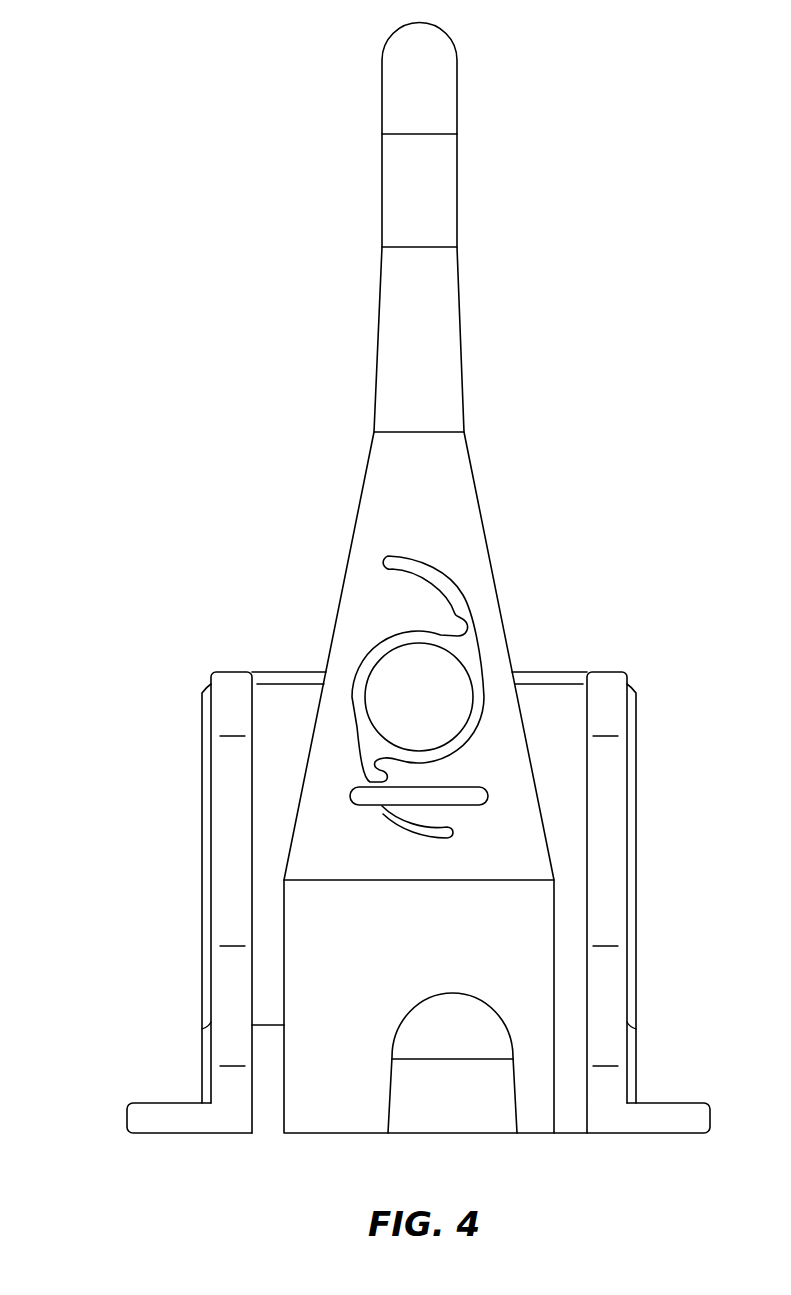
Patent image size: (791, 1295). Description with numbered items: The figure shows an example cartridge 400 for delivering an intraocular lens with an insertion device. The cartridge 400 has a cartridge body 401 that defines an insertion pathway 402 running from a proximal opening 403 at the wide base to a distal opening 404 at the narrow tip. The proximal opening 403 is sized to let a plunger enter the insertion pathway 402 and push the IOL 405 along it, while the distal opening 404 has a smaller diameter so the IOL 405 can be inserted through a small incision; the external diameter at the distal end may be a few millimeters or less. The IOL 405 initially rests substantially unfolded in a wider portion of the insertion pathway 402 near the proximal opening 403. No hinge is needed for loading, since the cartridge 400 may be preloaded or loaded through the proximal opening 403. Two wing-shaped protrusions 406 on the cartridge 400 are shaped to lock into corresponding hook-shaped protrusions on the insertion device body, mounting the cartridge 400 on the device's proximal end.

The cartridge 400 is at (144, 274).
The cartridge body 401 is at (407, 432).
The insertion pathway 402 is at (477, 962).
The proximal opening 403 is at (343, 1133).
The distal opening 404 is at (382, 55).
The IOL 405 is at (407, 657).
The protrusions 406 is at (202, 752).